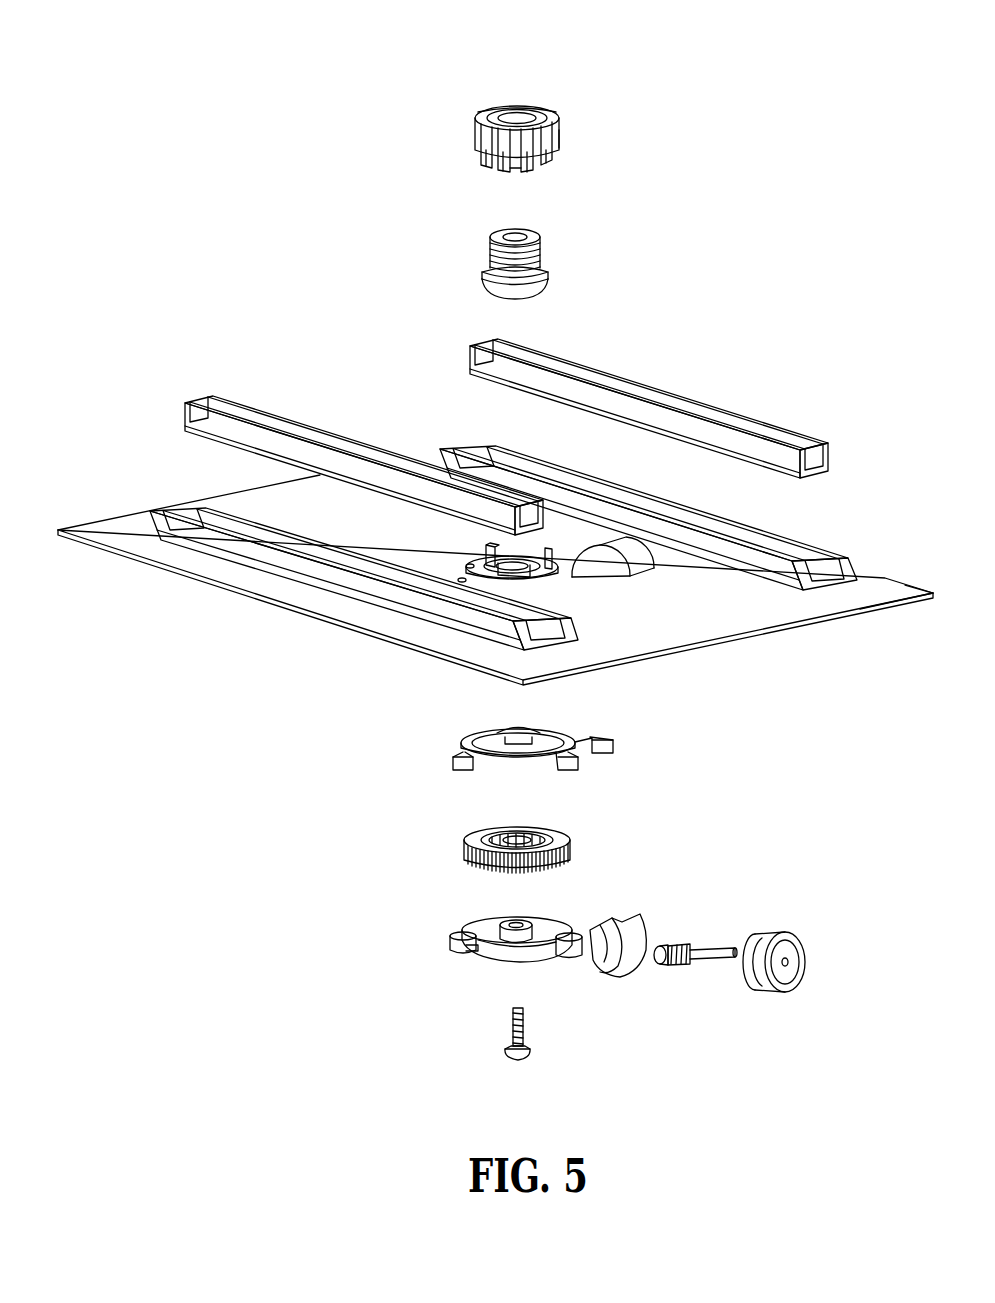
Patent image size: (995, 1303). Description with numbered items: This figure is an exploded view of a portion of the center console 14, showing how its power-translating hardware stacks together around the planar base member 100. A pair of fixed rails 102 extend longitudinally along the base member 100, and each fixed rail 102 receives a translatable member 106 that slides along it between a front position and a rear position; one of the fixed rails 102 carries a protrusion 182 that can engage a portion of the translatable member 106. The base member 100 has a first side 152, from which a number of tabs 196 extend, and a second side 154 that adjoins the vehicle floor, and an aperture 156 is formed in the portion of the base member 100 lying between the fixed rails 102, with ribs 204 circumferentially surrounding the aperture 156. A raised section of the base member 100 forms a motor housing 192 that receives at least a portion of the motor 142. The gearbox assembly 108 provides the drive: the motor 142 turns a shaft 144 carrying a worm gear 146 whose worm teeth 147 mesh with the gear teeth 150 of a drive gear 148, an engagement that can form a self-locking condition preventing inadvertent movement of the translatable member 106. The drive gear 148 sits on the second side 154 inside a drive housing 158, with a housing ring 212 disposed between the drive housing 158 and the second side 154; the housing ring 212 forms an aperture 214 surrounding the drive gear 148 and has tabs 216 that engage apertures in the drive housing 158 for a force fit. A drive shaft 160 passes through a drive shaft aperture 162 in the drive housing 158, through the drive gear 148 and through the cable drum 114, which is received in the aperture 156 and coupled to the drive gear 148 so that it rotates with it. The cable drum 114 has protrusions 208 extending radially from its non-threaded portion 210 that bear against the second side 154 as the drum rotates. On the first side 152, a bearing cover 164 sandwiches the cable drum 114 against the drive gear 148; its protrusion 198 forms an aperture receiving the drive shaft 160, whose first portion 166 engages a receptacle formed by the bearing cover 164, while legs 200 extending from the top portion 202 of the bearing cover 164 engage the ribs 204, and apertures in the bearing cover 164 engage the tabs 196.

The center console 14 is at (755, 75).
The base member 100 is at (105, 525).
The fixed rail 102 is at (235, 562).
The translatable member 106 is at (180, 410).
The gearbox assembly 108 is at (391, 977).
The cable drum 114 is at (524, 271).
The motor 142 is at (800, 986).
The shaft 144 is at (712, 950).
The worm gear 146 is at (663, 963).
The worm teeth 147 is at (680, 967).
The drive gear 148 is at (523, 848).
The gear teeth 150 is at (568, 845).
The first side 152 is at (893, 576).
The second side 154 is at (890, 605).
The aperture 156 is at (548, 571).
The drive housing 158 is at (501, 922).
The drive shaft 160 is at (506, 1050).
The drive shaft aperture 162 is at (518, 920).
The bearing cover 164 is at (472, 147).
The first portion 166 is at (513, 1027).
The protrusion 182 is at (531, 622).
The motor housing 192 is at (630, 566).
The tabs 196 is at (500, 576).
The protrusion 198 is at (522, 170).
The legs 200 is at (558, 147).
The top portion 202 is at (490, 113).
The ribs 204 is at (548, 568).
The protrusions 208 is at (548, 290).
The non-threaded portion 210 is at (505, 280).
The housing ring 212 is at (495, 753).
The aperture 214 is at (533, 748).
The tabs 216 is at (460, 766).